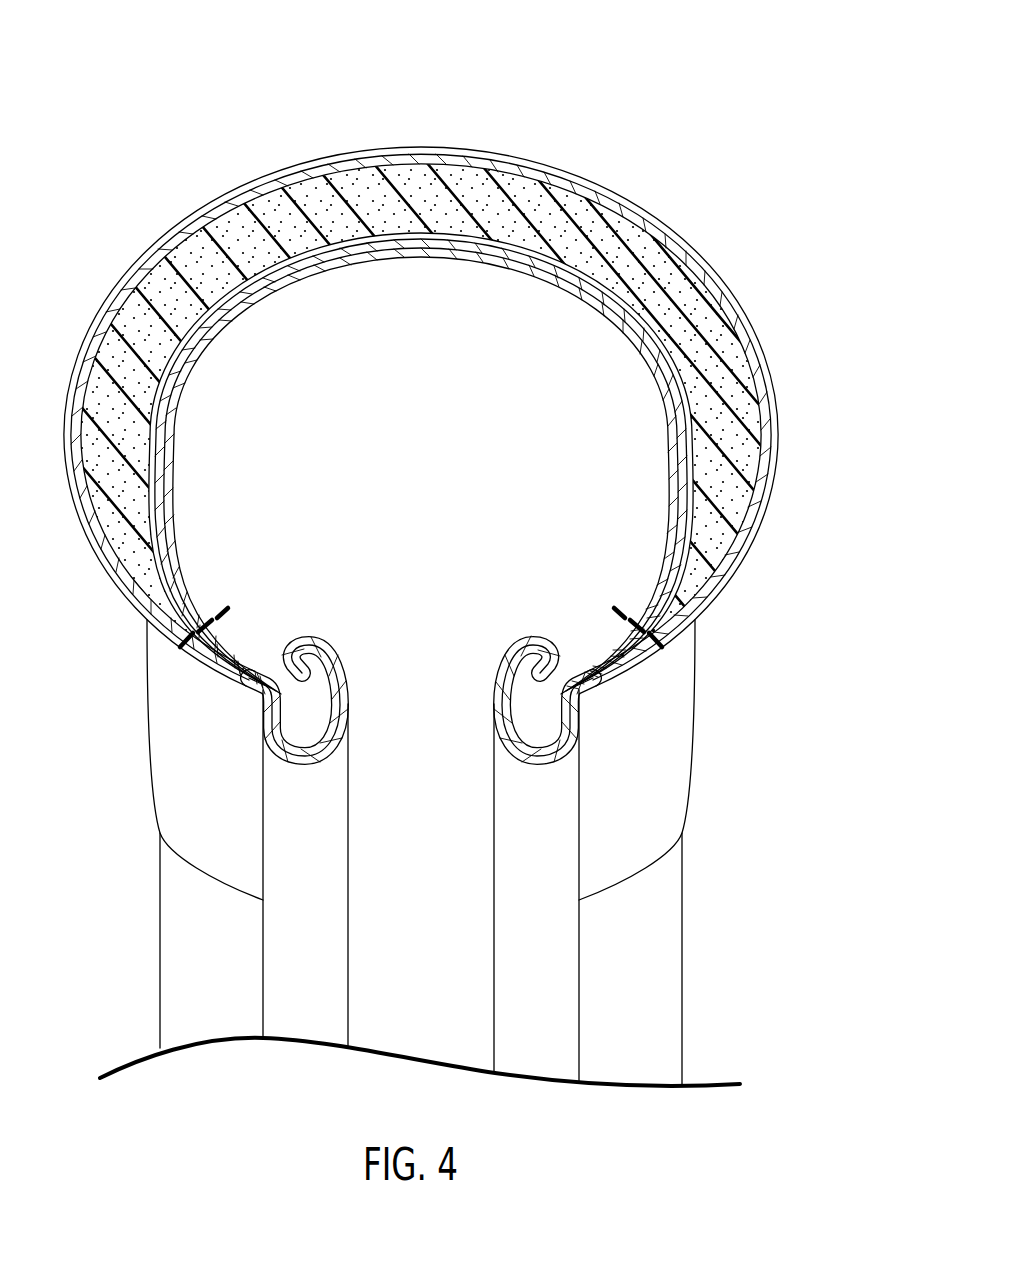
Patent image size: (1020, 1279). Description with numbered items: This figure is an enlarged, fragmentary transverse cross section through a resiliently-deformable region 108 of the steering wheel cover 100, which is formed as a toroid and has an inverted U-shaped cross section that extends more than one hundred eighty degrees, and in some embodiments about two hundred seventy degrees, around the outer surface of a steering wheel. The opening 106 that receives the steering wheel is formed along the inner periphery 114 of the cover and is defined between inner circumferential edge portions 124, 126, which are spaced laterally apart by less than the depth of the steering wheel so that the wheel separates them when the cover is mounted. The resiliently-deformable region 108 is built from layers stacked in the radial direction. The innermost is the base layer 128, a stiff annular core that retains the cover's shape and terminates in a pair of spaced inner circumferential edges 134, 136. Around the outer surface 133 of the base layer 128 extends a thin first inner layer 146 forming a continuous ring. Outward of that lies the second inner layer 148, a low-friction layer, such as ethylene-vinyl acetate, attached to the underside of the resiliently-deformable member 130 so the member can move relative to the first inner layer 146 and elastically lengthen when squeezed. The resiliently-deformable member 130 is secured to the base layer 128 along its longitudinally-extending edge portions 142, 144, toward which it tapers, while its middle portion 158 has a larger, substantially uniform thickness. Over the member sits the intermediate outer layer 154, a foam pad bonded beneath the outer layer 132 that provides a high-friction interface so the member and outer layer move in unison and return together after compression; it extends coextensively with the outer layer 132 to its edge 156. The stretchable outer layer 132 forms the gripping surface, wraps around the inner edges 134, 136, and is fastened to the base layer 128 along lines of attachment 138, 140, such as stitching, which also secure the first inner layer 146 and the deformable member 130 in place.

The steering wheel cover 100 is at (755, 102).
The opening 106 is at (400, 1030).
The resiliently-deformable region 108 is at (278, 120).
The inner periphery 114 is at (296, 928).
The inner circumferential edge portion 124 is at (293, 805).
The inner circumferential edge portion 126 is at (552, 808).
The base layer 128 is at (413, 252).
The resiliently-deformable member 130 is at (494, 192).
The outer layer 132 is at (394, 150).
The outer surface 133 is at (317, 265).
The inner circumferential edge 134 is at (313, 665).
The inner circumferential edge 136 is at (537, 668).
The line of attachment 138 is at (183, 645).
The line of attachment 140 is at (670, 652).
The longitudinally-extending edge portion 142 is at (170, 630).
The longitudinally-extending edge portion 144 is at (613, 672).
The first inner layer 146 is at (247, 300).
The second inner layer 148 is at (545, 262).
The intermediate outer layer 154 is at (590, 193).
The edge of the outer layer 156 is at (633, 572).
The middle portion 158 is at (197, 250).